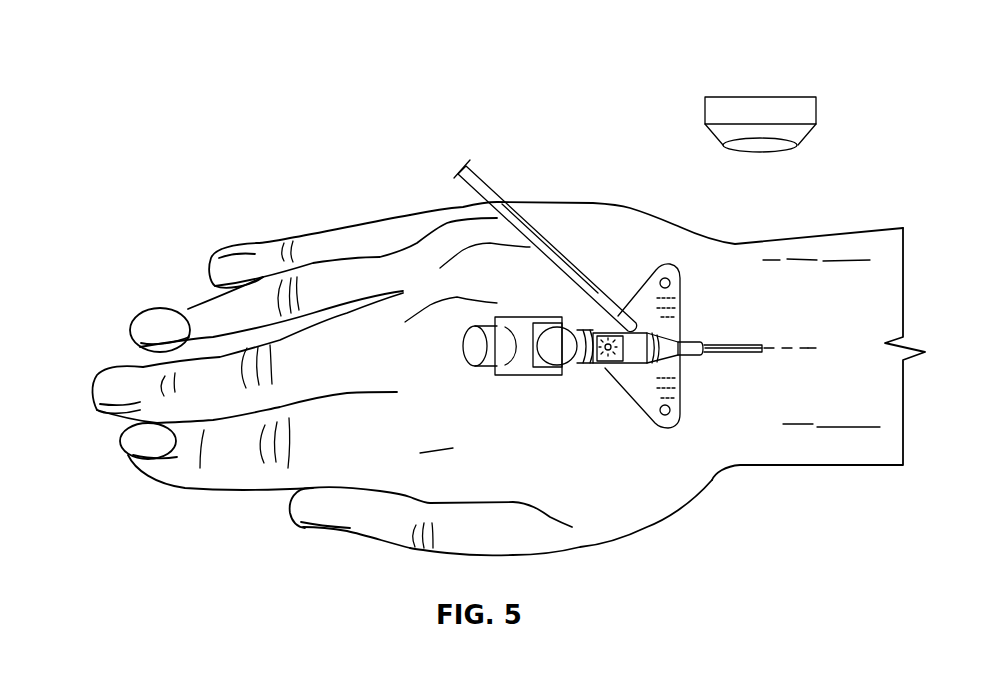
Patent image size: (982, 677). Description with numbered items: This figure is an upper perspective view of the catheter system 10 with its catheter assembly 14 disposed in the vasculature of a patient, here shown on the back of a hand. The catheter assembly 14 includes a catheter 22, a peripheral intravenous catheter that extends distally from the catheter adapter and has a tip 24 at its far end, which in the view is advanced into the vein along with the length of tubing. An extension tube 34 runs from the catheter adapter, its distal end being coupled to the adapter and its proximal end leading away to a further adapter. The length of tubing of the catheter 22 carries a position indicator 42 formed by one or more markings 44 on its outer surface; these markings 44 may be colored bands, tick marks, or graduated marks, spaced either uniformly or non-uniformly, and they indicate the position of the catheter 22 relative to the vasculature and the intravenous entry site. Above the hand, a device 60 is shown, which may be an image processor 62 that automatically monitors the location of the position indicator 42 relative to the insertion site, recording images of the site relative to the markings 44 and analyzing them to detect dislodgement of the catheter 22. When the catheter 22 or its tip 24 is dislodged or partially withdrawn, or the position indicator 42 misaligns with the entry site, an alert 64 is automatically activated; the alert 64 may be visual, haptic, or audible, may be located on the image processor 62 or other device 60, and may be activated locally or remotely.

The catheter system 10 is at (598, 394).
The catheter assembly 14 is at (658, 261).
The catheter 22 is at (733, 345).
The tip 24 is at (816, 348).
The extension tube 34 is at (487, 185).
The position indicator 42 is at (753, 355).
The markings 44 is at (773, 348).
The device 60 is at (643, 67).
The image processor 62 is at (810, 97).
The alert 64 is at (606, 328).